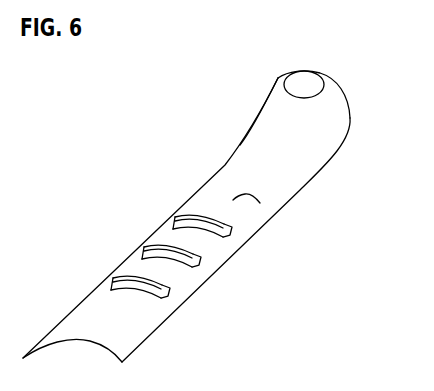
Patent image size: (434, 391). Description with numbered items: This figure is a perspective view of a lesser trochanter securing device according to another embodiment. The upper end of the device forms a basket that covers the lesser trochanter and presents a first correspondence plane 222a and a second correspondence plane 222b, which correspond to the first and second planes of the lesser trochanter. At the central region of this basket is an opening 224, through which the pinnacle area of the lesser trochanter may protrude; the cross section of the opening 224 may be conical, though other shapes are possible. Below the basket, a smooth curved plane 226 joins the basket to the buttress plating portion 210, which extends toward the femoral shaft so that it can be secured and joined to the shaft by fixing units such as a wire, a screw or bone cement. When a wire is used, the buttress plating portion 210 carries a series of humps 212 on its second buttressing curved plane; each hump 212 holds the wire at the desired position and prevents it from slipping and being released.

The buttress plating portion 210 is at (217, 275).
The hump 212 is at (123, 283).
The first correspondence plane 222a is at (334, 110).
The second correspondence plane 222b is at (275, 105).
The opening 224 is at (282, 83).
The smooth curved plane 226 is at (260, 203).